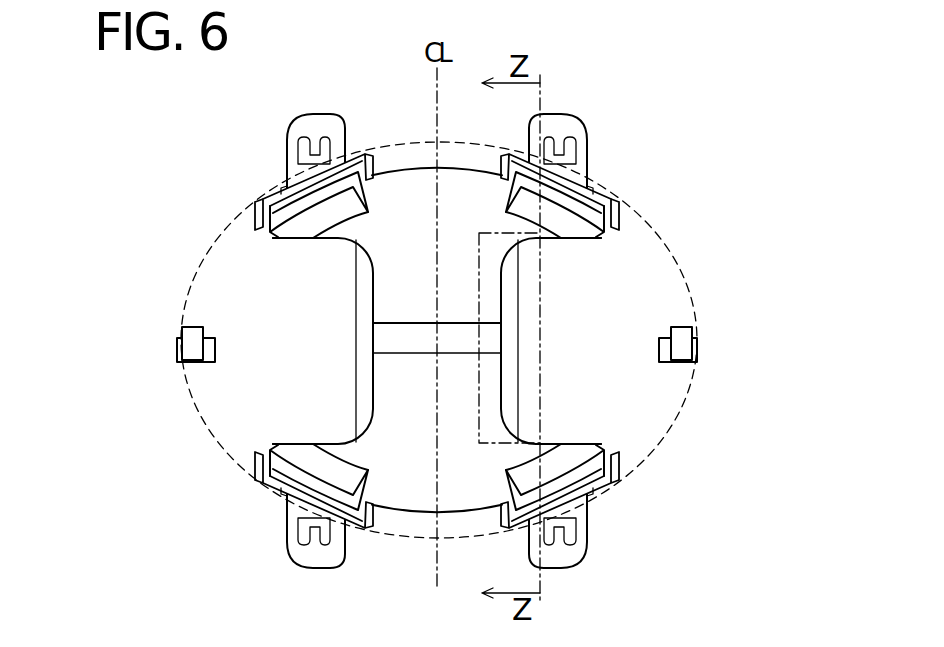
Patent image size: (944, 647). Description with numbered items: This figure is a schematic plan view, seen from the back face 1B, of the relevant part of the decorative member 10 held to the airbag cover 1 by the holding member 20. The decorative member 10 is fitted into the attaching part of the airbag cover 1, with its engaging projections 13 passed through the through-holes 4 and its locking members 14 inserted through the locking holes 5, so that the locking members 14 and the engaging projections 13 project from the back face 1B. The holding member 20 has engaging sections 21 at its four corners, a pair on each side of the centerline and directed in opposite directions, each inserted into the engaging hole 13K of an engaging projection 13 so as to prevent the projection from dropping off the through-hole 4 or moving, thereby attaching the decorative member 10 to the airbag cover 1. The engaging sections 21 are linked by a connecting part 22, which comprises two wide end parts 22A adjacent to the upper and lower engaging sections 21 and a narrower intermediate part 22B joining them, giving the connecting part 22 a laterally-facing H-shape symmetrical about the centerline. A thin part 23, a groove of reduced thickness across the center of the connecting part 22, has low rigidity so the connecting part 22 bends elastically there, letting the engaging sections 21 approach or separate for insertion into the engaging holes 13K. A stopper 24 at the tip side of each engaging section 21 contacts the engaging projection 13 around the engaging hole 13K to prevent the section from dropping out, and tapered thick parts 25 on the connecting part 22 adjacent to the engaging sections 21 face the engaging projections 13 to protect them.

The airbag cover 1 is at (140, 157).
The back face 1B is at (210, 277).
The through-hole 4 is at (253, 212).
The locking hole 5 is at (207, 367).
The decorative member 10 is at (707, 252).
The engaging projection 13 is at (270, 192).
The engaging hole 13K is at (287, 176).
The locking member 14 is at (187, 330).
The holding member 20 is at (411, 158).
The engaging section 21 is at (315, 127).
The connecting part 22 is at (383, 307).
The end part 22A is at (465, 187).
The intermediate part 22B is at (495, 377).
The thin part 23 is at (490, 337).
The stopper 24 is at (300, 143).
The thick part 25 is at (268, 240).